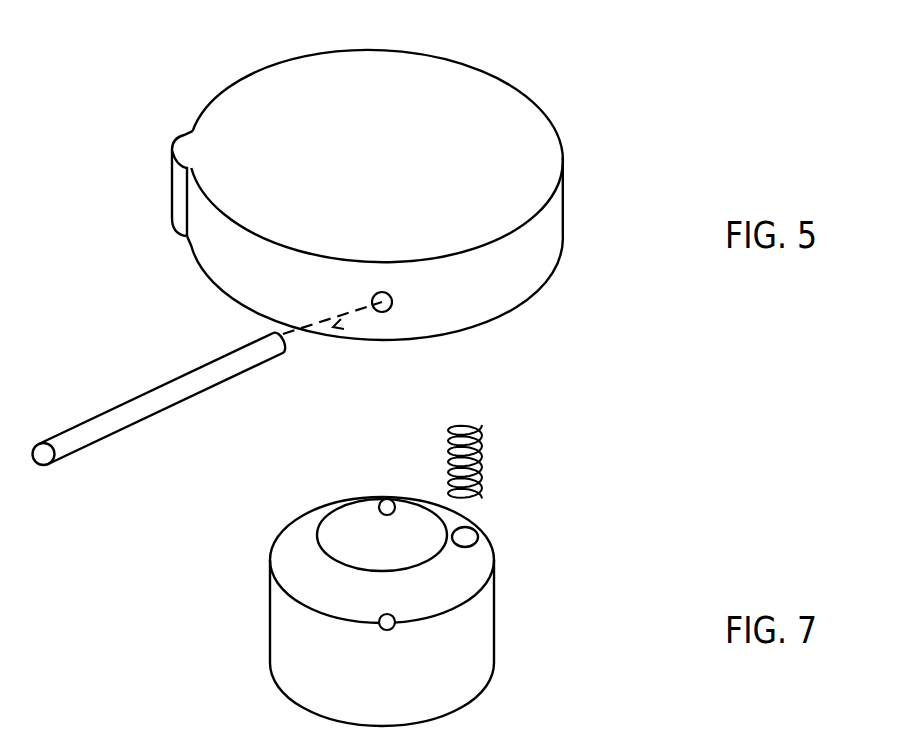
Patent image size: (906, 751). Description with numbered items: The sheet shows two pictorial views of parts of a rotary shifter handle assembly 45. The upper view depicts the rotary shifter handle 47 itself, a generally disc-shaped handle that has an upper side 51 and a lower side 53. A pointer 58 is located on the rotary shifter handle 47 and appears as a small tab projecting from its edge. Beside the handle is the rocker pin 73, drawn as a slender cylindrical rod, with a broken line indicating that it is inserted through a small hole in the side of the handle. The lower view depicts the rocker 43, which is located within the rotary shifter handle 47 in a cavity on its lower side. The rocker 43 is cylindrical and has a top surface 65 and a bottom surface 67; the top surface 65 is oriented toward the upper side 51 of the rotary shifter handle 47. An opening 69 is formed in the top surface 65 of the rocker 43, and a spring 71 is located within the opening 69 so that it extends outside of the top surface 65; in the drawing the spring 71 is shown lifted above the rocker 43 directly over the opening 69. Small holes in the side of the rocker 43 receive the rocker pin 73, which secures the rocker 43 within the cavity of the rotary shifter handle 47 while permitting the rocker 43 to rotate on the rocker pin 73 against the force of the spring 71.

In FIG. 5, the rotary shifter handle assembly 45 is at (152, 95).
In FIG. 5, the rotary shifter handle 47 is at (470, 88).
In FIG. 5, the upper side 51 is at (351, 66).
In FIG. 5, the lower side 53 is at (205, 278).
In FIG. 5, the pointer 58 is at (176, 193).
In FIG. 5, the rocker pin 73 is at (178, 379).
In FIG. 7, the rocker 43 is at (483, 623).
In FIG. 7, the top surface 65 is at (290, 528).
In FIG. 7, the bottom surface 67 is at (292, 683).
In FIG. 7, the opening 69 is at (467, 533).
In FIG. 7, the spring 71 is at (480, 443).